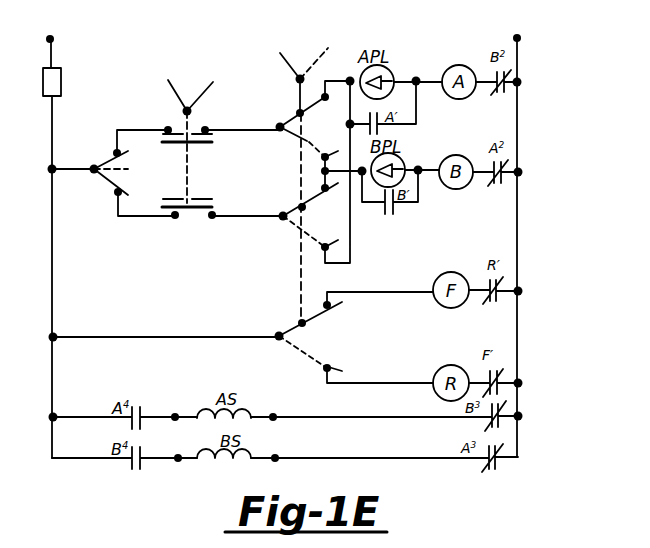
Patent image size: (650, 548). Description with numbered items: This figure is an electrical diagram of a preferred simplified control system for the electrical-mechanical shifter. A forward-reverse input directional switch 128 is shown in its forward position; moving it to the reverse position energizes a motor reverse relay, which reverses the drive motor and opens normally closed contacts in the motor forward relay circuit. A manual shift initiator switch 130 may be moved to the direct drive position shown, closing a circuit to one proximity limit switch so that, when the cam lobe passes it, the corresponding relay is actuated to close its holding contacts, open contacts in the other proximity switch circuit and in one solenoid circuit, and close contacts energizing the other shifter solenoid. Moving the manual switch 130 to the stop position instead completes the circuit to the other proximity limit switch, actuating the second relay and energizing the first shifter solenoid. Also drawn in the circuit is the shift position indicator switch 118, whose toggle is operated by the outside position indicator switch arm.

The shift position indicator switch 118 is at (128, 170).
The forward-reverse input directional switch 128 is at (298, 81).
The manual shift initiator switch 130 is at (173, 142).